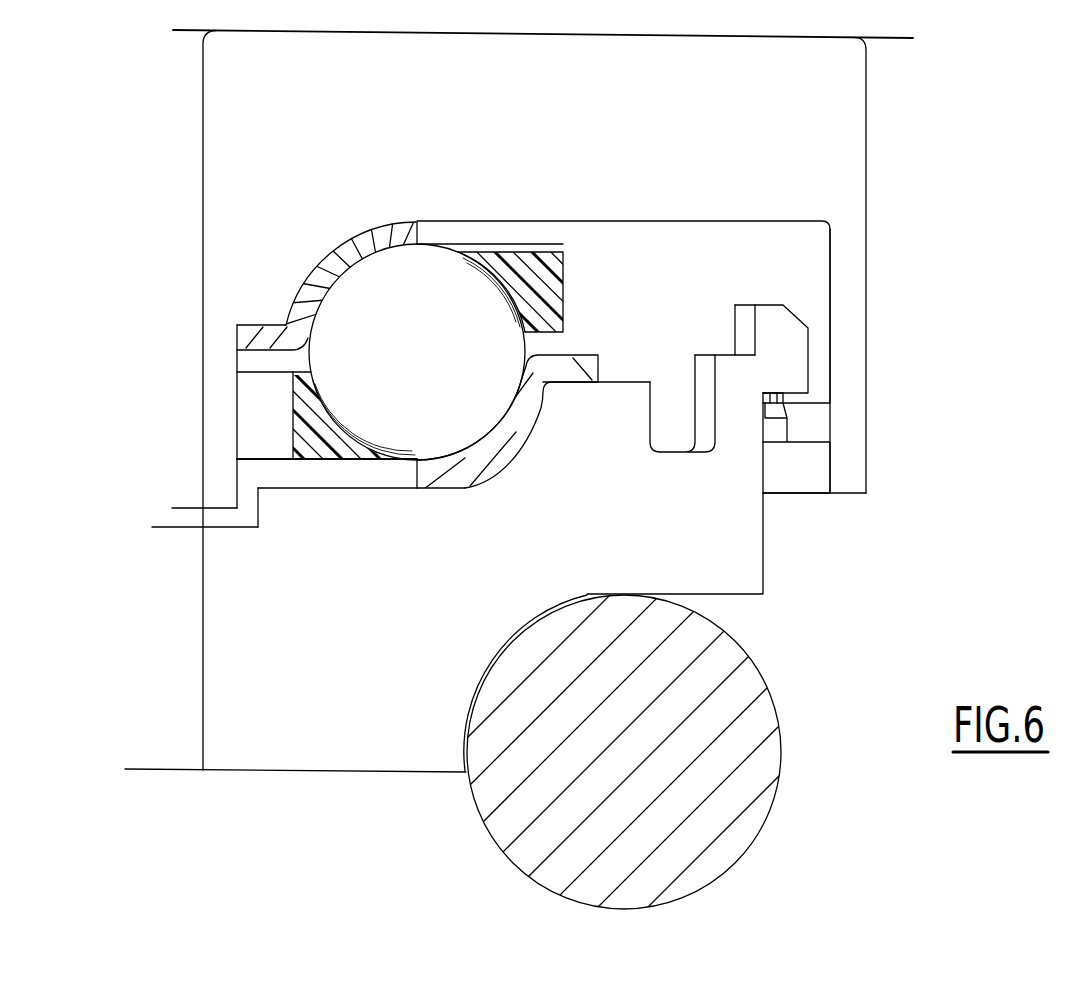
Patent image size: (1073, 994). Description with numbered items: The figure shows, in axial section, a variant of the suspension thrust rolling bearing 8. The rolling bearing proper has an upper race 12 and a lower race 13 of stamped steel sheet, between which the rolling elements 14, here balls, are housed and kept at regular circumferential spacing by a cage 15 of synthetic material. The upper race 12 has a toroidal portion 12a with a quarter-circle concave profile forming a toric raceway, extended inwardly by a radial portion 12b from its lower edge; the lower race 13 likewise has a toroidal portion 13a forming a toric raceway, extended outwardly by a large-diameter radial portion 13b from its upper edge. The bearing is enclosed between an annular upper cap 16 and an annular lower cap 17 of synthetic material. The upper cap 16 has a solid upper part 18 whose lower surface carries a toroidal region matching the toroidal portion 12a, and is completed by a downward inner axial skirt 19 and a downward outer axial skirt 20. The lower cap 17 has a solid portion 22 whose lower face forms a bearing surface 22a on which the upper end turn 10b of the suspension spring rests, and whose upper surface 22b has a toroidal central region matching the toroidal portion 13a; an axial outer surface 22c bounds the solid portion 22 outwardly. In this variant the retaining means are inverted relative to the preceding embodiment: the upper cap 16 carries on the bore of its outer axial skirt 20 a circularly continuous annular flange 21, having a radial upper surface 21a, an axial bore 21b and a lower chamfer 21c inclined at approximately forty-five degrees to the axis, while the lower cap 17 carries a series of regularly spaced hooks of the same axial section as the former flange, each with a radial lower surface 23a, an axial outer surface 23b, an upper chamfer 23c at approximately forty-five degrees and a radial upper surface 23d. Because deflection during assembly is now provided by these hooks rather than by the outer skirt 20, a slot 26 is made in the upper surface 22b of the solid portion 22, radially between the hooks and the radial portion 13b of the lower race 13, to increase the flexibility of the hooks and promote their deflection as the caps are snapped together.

The thrust rolling bearing 8 is at (176, 309).
The upper end turn of the spring 10b is at (742, 792).
The upper race 12 is at (345, 252).
The toroidal portion 12a is at (397, 235).
The radial portion 12b is at (255, 342).
The lower race 13 is at (512, 428).
The toroidal portion 13a is at (455, 470).
The radial portion 13b is at (576, 365).
The rolling elements 14 is at (432, 367).
The cage 15 is at (548, 262).
The upper cap 16 is at (532, 104).
The lower cap 17 is at (407, 631).
The solid upper part 18 is at (828, 115).
The inner axial skirt 19 is at (208, 477).
The outer axial skirt 20 is at (843, 470).
The annular flange 21 is at (812, 424).
The radial upper surface 21a is at (815, 403).
The axial bore 21b is at (784, 394).
The lower chamfer 21c is at (788, 420).
The solid portion 22 is at (335, 737).
The bearing surface 22a is at (531, 620).
The upper surface 22b is at (327, 477).
The axial outer surface 22c is at (765, 548).
The radial lower surface 23a is at (765, 410).
The axial outer surface 23b is at (810, 345).
The upper chamfer 23c is at (793, 302).
The radial upper surface 23d is at (762, 302).
The slot 26 is at (667, 410).